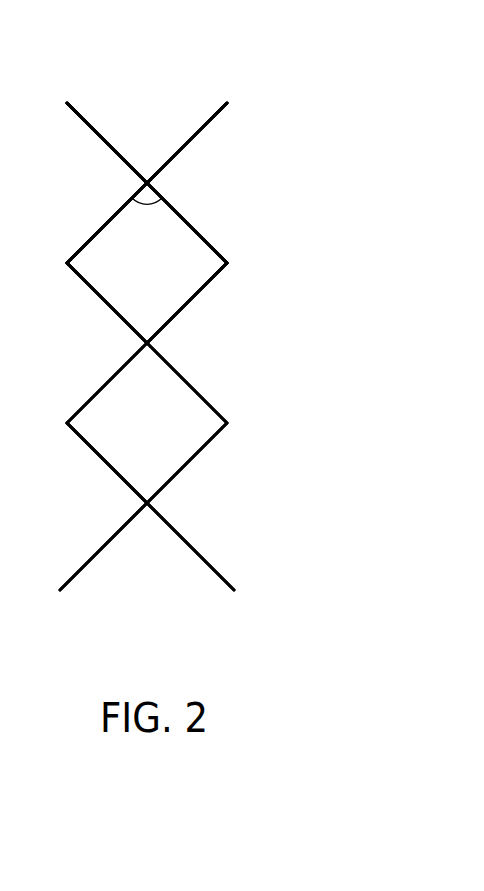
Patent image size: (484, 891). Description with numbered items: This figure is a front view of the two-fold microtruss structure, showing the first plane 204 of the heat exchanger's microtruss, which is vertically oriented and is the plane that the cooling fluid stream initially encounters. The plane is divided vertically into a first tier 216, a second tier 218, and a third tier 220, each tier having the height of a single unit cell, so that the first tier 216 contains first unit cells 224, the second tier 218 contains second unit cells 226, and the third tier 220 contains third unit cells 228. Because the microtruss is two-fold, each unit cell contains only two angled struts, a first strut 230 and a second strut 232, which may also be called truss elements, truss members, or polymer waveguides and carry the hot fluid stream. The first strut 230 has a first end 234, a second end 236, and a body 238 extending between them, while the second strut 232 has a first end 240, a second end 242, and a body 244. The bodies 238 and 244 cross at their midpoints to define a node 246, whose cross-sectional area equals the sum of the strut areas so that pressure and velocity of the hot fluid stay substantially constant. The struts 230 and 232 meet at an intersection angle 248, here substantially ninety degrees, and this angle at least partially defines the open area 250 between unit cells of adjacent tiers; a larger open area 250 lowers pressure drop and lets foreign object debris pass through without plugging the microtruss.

The first plane 204 is at (265, 98).
The first tier 216 is at (224, 499).
The second tier 218 is at (222, 344).
The third tier 220 is at (222, 184).
The first unit cell 224 is at (75, 479).
The second unit cell 226 is at (75, 327).
The third unit cell 228 is at (75, 158).
The first strut 230 is at (92, 126).
The second strut 232 is at (185, 144).
The first end 234 is at (68, 102).
The second end 236 is at (229, 260).
The body 238 is at (186, 220).
The first end 240 is at (226, 103).
The second end 242 is at (70, 256).
The body 244 is at (118, 210).
The node 246 is at (150, 183).
The intersection angle 248 is at (148, 204).
The open area 250 is at (170, 271).